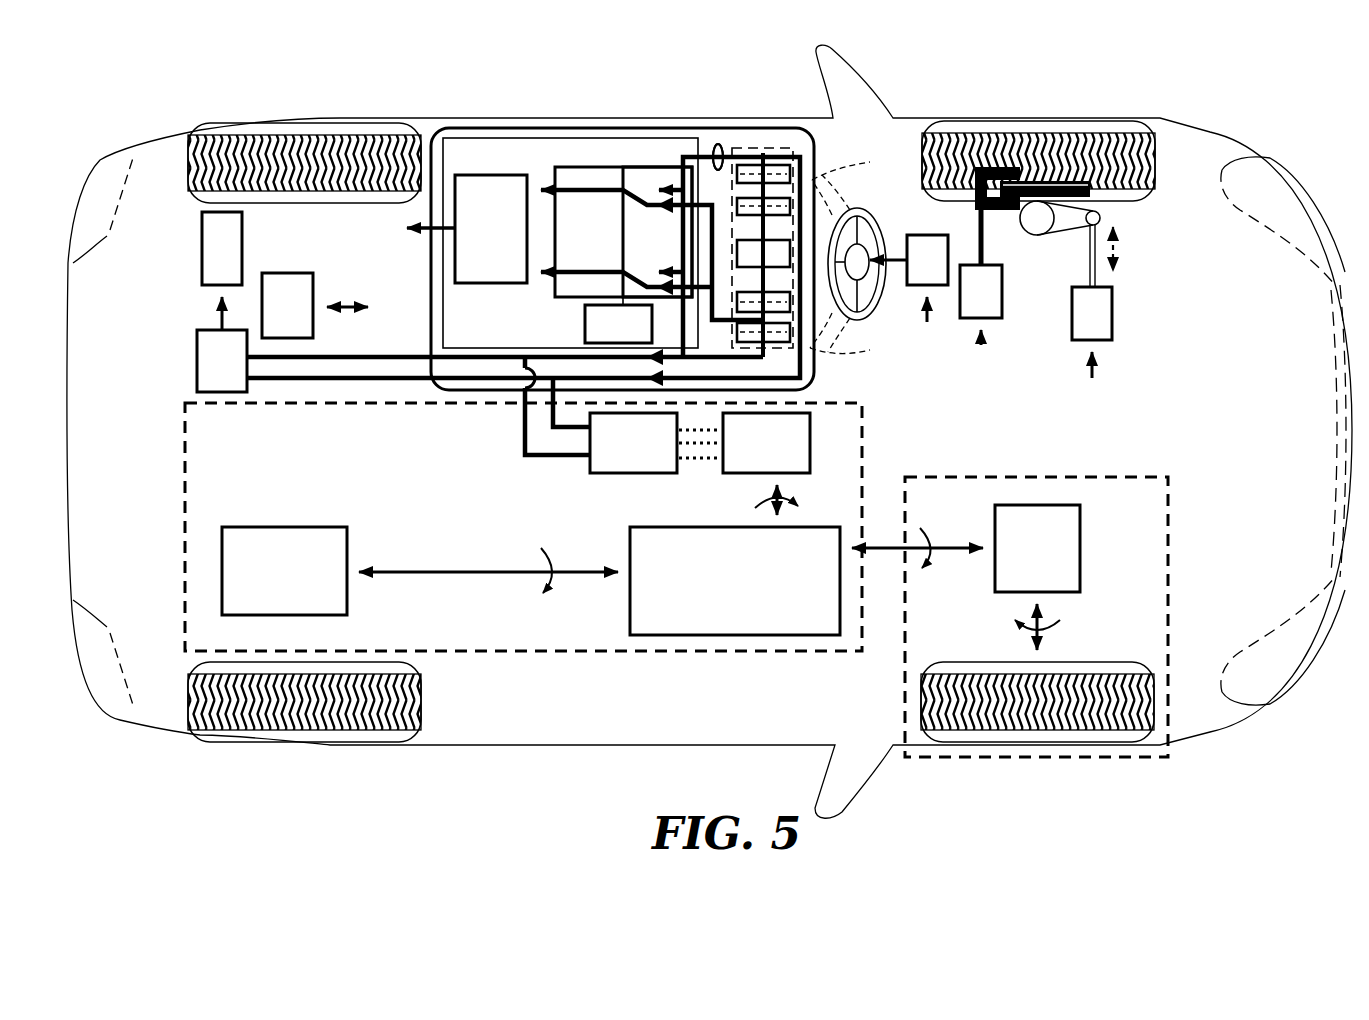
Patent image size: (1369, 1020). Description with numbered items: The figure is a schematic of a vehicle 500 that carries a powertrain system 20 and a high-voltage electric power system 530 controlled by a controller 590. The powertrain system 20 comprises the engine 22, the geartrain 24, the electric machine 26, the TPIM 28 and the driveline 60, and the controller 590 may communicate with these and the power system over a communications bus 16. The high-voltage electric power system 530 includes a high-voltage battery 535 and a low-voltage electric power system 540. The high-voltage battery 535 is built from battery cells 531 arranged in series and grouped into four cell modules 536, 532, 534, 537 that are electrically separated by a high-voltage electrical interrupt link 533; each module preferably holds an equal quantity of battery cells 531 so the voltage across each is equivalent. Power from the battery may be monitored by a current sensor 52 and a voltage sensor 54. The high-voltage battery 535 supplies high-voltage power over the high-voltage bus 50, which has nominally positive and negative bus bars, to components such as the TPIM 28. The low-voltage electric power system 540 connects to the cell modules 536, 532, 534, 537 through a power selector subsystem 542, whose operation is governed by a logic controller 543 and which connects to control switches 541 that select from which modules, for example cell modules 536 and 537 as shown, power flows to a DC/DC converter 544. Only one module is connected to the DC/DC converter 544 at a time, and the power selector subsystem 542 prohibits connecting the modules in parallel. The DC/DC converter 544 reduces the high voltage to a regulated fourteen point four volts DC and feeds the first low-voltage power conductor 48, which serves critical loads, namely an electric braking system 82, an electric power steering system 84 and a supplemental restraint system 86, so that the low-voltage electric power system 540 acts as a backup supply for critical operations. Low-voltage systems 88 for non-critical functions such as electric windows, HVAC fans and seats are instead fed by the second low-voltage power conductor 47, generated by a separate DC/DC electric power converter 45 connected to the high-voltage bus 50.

The vehicle 500 is at (1156, 254).
The low-voltage electric power system 540 is at (494, 126).
The DC/DC converter 544 is at (469, 243).
The power selector subsystem 542 is at (567, 243).
The control switches 541 is at (636, 243).
The logic controller 543 is at (597, 337).
The high-voltage electric power system 530 is at (735, 114).
The high-voltage battery 535 is at (788, 140).
The battery cells 531 is at (790, 173).
The cell module 532 is at (790, 206).
The high-voltage electrical interrupt link 533 is at (790, 252).
The cell module 534 is at (790, 302).
The cell module 537 is at (790, 330).
The current sensor 52 is at (717, 143).
The voltage sensor 54 is at (718, 157).
The cell module 536 is at (813, 147).
The low-voltage systems 88 is at (207, 263).
The controller 590 is at (265, 319).
The communications bus 16 is at (358, 303).
The second low-voltage power conductor 47 is at (217, 310).
The DC/DC electric power converter 45 is at (197, 363).
The high-voltage bus 50 is at (393, 376).
The first low-voltage power conductor 48 is at (420, 229).
The supplemental restraint system 86 is at (913, 274).
The electric braking system 82 is at (966, 305).
The electric power steering system 84 is at (1077, 327).
The powertrain system 20 is at (870, 440).
The engine 22 is at (269, 586).
The geartrain 24 is at (720, 595).
The electric machine 26 is at (751, 457).
The TPIM 28 is at (618, 457).
The driveline 60 is at (988, 468).